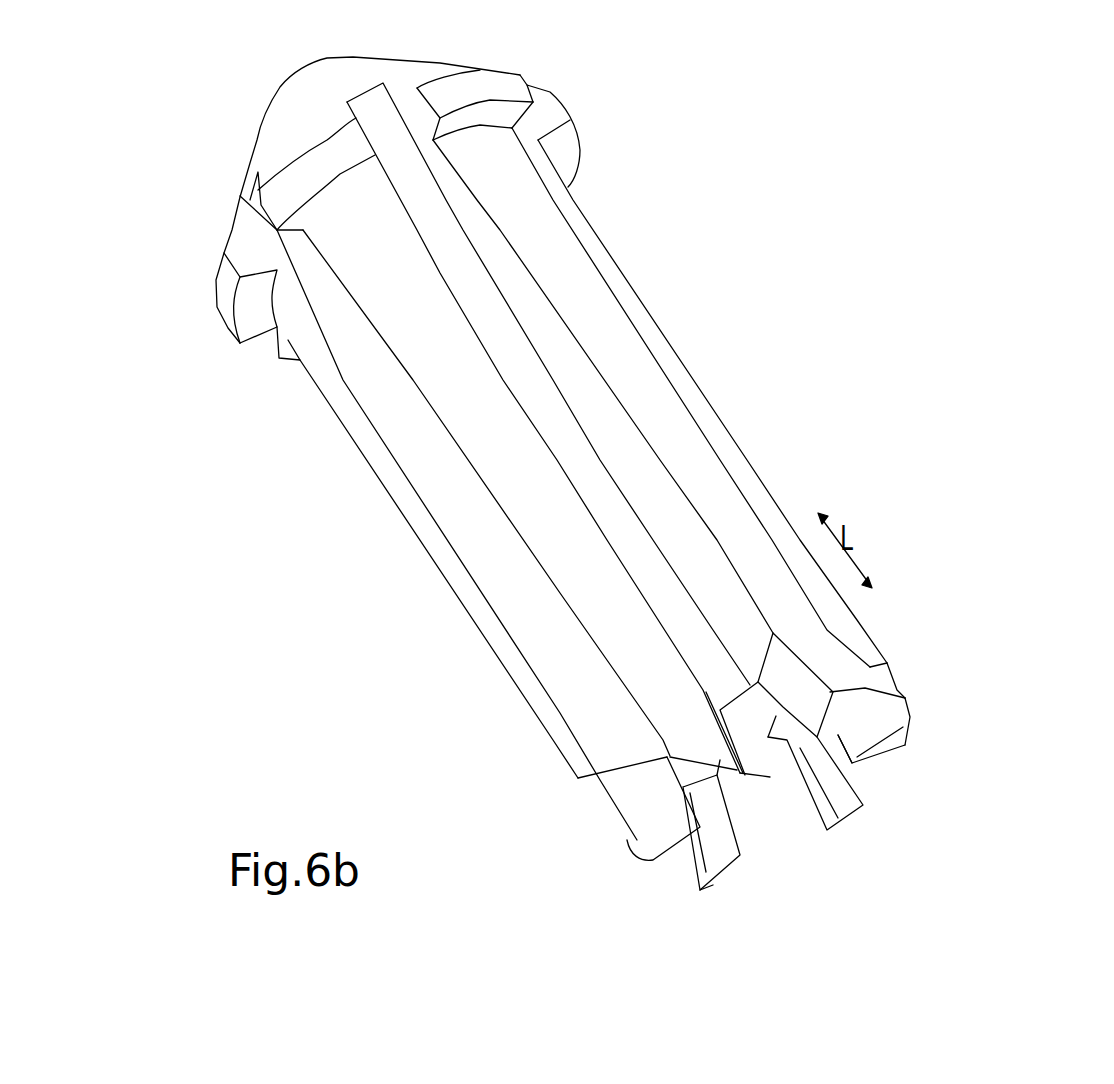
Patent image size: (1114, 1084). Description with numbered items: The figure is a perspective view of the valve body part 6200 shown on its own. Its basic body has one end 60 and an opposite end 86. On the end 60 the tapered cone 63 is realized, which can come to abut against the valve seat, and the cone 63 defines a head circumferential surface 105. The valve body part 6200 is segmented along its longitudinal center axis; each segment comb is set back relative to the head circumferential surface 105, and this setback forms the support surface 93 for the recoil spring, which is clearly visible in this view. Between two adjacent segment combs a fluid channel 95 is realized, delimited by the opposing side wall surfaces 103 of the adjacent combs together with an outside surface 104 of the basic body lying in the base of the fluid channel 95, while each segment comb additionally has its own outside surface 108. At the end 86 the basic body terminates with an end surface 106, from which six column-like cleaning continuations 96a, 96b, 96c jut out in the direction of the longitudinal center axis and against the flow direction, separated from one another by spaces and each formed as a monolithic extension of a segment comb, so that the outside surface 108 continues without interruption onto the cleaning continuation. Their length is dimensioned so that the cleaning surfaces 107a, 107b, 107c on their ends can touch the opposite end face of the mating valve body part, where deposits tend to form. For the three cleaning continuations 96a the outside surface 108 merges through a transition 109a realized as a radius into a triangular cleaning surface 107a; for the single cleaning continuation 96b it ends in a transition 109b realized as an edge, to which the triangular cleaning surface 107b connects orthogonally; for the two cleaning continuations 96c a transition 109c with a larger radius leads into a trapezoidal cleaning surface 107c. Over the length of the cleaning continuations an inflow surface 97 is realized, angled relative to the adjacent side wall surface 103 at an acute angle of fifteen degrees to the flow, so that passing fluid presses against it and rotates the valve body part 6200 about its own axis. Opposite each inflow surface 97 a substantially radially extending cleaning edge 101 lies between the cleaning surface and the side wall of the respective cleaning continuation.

The valve body part 6200 is at (272, 97).
The head circumferential surface 105 is at (316, 162).
The tapered cone 63 is at (250, 178).
The end 60 is at (223, 319).
The support surface 93 is at (558, 144).
The fluid channel 95 is at (497, 287).
The outside surface of the basic body 104 is at (520, 373).
The side wall surface 103 is at (462, 498).
The outside surface of the segment comb 108 is at (712, 472).
The end 86 is at (733, 683).
The inflow surface 97 is at (793, 678).
The cleaning continuation 96b is at (865, 668).
The transition 109b is at (857, 697).
The cleaning surface 107b is at (842, 706).
The transition 109c is at (912, 727).
The cleaning continuation 96c is at (908, 740).
The cleaning surface 107c is at (886, 742).
The cleaning edge 101 is at (822, 825).
The end surface 106 is at (752, 710).
The cleaning continuation 96a is at (673, 868).
The transition 109a is at (707, 873).
The cleaning surface 107a is at (680, 857).